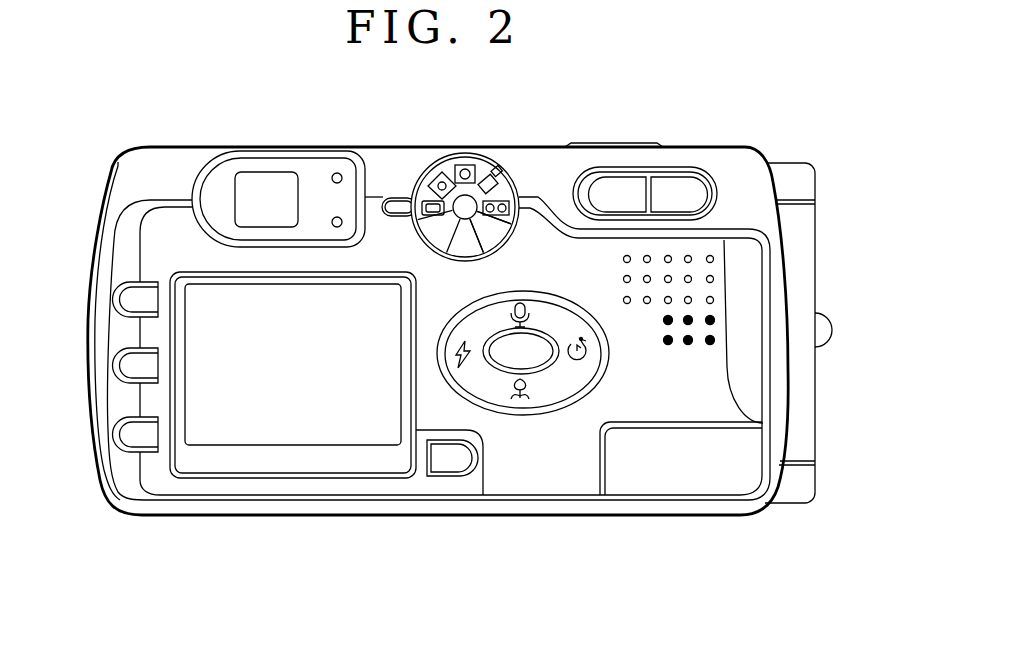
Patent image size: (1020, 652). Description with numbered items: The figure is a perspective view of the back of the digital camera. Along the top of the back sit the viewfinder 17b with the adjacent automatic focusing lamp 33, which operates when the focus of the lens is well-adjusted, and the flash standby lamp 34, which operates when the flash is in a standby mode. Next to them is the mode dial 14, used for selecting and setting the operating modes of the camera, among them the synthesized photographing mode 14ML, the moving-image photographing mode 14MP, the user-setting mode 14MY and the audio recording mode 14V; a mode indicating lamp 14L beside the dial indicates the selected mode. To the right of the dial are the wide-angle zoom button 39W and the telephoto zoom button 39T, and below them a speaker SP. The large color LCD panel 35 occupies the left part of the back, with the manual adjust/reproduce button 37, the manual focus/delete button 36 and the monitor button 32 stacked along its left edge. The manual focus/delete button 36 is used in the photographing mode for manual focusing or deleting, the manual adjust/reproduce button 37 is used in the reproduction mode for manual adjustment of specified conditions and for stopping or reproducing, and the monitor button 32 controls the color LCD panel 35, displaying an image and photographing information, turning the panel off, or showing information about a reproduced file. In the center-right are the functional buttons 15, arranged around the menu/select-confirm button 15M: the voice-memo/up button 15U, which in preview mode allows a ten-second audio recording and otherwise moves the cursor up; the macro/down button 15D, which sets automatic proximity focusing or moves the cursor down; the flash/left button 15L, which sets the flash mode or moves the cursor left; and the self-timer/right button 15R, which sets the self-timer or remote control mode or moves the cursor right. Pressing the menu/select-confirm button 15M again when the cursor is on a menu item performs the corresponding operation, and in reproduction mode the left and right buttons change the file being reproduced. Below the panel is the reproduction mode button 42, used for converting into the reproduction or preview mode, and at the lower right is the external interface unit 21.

The viewfinder 17b is at (264, 180).
The automatic focusing lamp 33 is at (334, 174).
The flash standby lamp 34 is at (342, 218).
The mode dial 14 is at (475, 153).
The mode indicating lamp 14L is at (400, 207).
The moving-image photographing mode 14MP is at (497, 170).
The audio recording mode 14V is at (503, 197).
The synthesized photographing mode 14ML is at (425, 213).
The user-setting mode 14MY is at (500, 233).
The wide-angle zoom button 39W is at (612, 193).
The telephoto zoom button 39T is at (681, 190).
The speaker SP is at (712, 320).
The manual adjust/reproduce button 37 is at (127, 299).
The manual focus/delete button 36 is at (127, 366).
The monitor button 32 is at (127, 434).
The functional buttons 15 is at (495, 428).
The voice-memo/up button 15U is at (511, 311).
The macro/down button 15D is at (531, 392).
The flash/left button 15L is at (460, 363).
The self-timer/right button 15R is at (588, 349).
The menu/select-confirm button 15M is at (543, 358).
The color LCD panel 35 is at (288, 427).
The reproduction mode button 42 is at (443, 460).
The external interface unit 21 is at (727, 475).